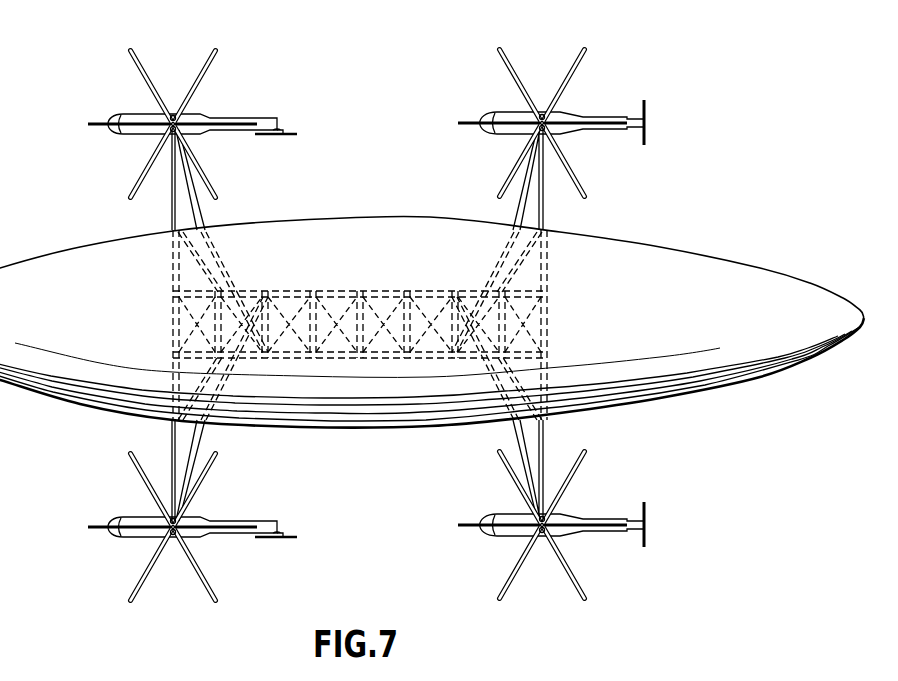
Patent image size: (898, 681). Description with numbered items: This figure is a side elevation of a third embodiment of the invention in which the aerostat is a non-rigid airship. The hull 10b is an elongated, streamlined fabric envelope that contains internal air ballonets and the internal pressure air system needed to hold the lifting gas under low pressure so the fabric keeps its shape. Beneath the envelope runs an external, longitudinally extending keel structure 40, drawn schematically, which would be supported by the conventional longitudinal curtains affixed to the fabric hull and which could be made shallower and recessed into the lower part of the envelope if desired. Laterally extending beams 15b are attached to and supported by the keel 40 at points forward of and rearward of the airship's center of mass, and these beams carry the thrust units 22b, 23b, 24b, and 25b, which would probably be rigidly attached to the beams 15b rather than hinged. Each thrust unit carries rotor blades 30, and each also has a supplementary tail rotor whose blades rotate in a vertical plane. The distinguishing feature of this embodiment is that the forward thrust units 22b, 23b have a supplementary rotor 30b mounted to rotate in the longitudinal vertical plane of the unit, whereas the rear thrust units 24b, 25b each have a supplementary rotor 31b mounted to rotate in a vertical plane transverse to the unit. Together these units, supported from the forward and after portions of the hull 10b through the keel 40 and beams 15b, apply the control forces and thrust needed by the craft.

The hull 10b is at (712, 260).
The laterally extending beams 15b is at (199, 212).
The forward thrust unit 22b is at (118, 87).
The forward thrust unit 23b is at (123, 576).
The rear thrust unit 24b is at (611, 94).
The rear thrust unit 25b is at (599, 560).
The blades 30 is at (205, 60).
The supplementary rotor 30b is at (288, 133).
The supplementary rotor 31b is at (645, 112).
The keel structure 40 is at (382, 292).